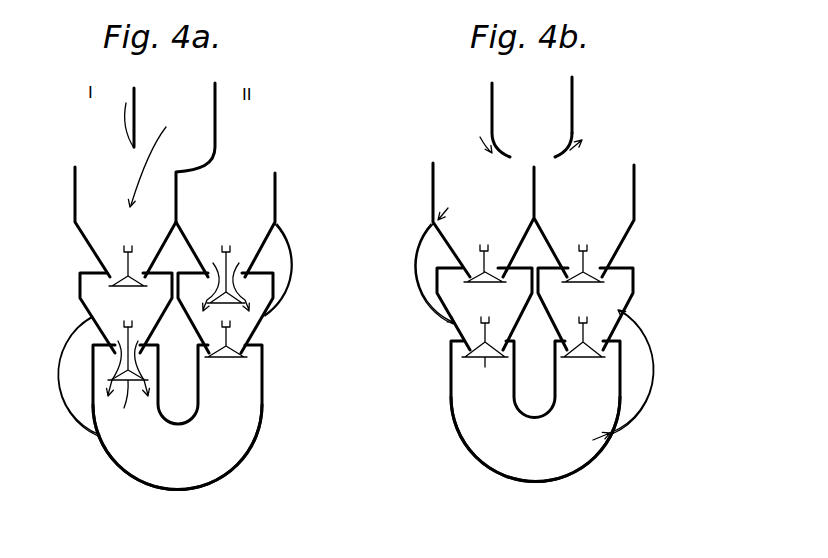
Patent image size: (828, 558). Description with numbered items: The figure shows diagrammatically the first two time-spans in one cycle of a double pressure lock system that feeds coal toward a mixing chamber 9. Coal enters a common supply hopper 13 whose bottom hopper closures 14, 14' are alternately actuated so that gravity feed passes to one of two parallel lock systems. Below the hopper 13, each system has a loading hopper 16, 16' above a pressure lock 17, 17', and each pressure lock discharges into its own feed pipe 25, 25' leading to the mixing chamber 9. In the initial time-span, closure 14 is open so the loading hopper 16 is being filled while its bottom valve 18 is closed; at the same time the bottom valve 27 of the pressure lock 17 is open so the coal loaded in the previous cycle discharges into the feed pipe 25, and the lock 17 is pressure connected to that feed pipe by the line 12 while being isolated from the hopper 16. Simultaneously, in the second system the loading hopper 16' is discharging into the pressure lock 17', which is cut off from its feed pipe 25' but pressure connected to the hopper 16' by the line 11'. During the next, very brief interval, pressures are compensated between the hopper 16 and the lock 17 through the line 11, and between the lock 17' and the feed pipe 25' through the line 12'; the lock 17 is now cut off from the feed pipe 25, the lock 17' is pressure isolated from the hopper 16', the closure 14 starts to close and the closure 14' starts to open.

In FIG. 4A, the mixing chamber 9 is at (152, 496).
In FIG. 4B, the mixing chamber 9 is at (524, 495).
In FIG. 4B, the pressure compensating line 11 is at (416, 274).
In FIG. 4A, the pressure compensating line 11' is at (296, 270).
In FIG. 4A, the pressure connecting line 12 is at (57, 376).
In FIG. 4B, the pressure connecting line 12' is at (645, 375).
In FIG. 4A, the common supply hopper 13 is at (205, 115).
In FIG. 4B, the common supply hopper 13 is at (558, 98).
In FIG. 4B, the bottom hopper closure 14 is at (479, 120).
In FIG. 4B, the bottom hopper closure 14' is at (591, 138).
In FIG. 4A, the loading hopper 16 is at (74, 222).
In FIG. 4B, the loading hopper 16 is at (435, 220).
In FIG. 4A, the loading hopper 16' is at (281, 225).
In FIG. 4B, the loading hopper 16' is at (637, 221).
In FIG. 4A, the pressure lock 17 is at (105, 313).
In FIG. 4B, the pressure lock 17 is at (472, 309).
In FIG. 4A, the pressure lock 17' is at (248, 313).
In FIG. 4B, the pressure lock 17' is at (606, 309).
In FIG. 4A, the bottom valve 18 is at (122, 270).
In FIG. 4B, the bottom valve 18 is at (492, 268).
In FIG. 4A, the feed pipe 25 is at (138, 417).
In FIG. 4B, the feed pipe 25 is at (491, 411).
In FIG. 4A, the feed pipe 25' is at (238, 417).
In FIG. 4B, the feed pipe 25' is at (594, 411).
In FIG. 4A, the bottom valve 27 is at (128, 375).
In FIG. 4B, the bottom valve 27 is at (485, 353).